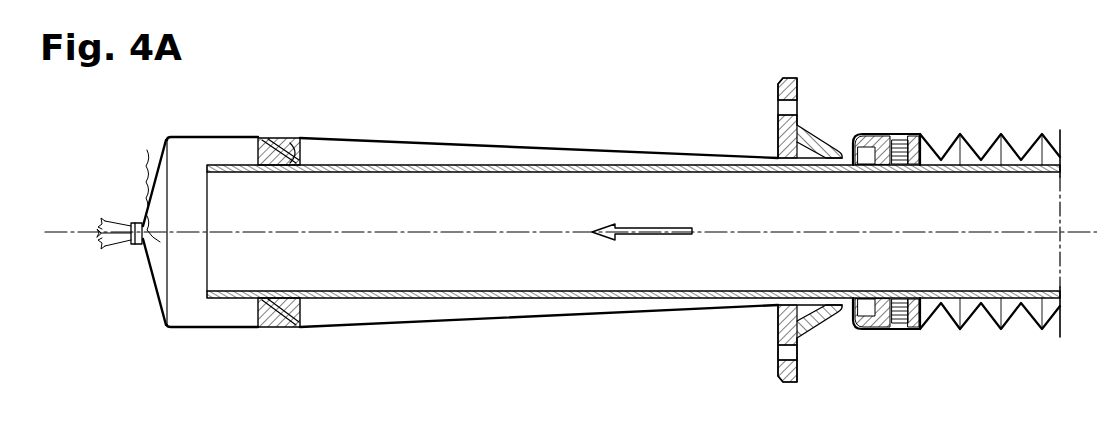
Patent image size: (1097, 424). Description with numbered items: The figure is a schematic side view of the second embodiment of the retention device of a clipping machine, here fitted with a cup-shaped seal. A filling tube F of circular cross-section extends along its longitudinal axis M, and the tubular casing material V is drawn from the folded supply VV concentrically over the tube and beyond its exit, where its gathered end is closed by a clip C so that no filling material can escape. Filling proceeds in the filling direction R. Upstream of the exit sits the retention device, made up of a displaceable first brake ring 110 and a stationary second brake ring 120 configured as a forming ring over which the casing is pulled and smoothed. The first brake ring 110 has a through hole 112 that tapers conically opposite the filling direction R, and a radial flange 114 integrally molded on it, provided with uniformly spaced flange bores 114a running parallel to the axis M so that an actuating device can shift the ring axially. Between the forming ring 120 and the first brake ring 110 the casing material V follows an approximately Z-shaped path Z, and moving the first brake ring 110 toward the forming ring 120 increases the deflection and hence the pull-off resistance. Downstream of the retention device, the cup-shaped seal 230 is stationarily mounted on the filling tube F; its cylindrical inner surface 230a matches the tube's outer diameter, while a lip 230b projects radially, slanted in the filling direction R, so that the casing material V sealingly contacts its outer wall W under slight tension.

The first brake ring 110 is at (794, 74).
The through hole 112 is at (792, 149).
The flange 114 is at (842, 364).
The flange bores 114a is at (792, 353).
The second brake ring 120 is at (882, 136).
The cup-shaped seal 230 is at (291, 229).
The cylindrical inner surface 230a is at (293, 139).
The lip 230b is at (255, 150).
The longitudinal axis M is at (57, 230).
The tool / cone W is at (155, 170).
The clip C is at (133, 246).
The tubular casing material V is at (482, 145).
The filling tube F is at (470, 300).
The filling direction R is at (642, 221).
The Z-shaped path Z is at (848, 145).
The supply VV is at (1010, 150).